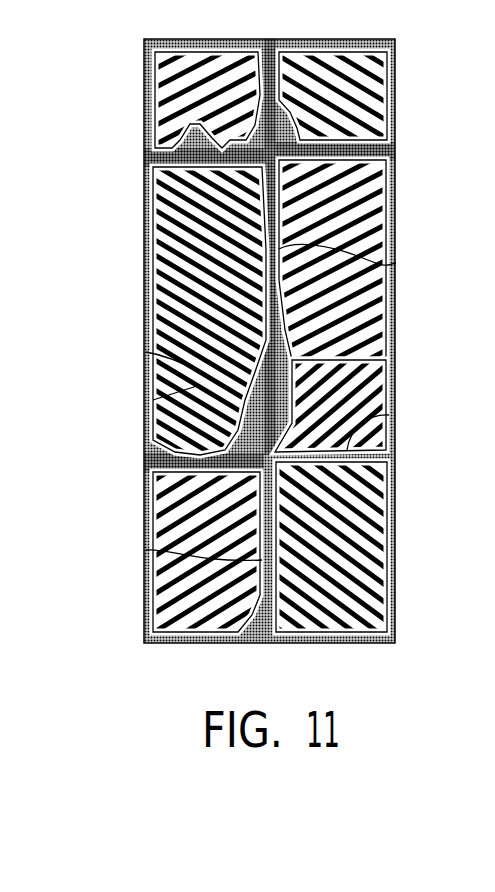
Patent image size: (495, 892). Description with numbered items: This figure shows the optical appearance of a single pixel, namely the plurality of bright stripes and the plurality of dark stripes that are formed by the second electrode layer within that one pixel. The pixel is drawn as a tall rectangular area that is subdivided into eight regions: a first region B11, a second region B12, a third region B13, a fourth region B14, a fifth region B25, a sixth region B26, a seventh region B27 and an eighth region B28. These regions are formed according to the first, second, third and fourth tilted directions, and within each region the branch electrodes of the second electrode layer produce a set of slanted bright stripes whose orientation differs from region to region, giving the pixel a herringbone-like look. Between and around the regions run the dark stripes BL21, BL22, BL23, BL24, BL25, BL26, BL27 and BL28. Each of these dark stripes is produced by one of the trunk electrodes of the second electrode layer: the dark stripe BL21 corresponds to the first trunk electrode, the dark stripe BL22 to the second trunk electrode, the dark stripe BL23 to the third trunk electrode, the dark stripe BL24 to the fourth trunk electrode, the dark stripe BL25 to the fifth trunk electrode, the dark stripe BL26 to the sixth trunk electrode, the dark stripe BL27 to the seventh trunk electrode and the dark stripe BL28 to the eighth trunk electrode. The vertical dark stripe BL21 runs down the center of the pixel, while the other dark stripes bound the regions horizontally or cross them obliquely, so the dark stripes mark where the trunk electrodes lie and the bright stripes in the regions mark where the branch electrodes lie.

The first region B11 is at (396, 77).
The second region B12 is at (146, 70).
The third region B13 is at (146, 236).
The fourth region B14 is at (396, 218).
The fifth region B25 is at (150, 401).
The sixth region B26 is at (396, 380).
The seventh region B27 is at (158, 533).
The eighth region B28 is at (366, 500).
The dark stripe BL21 is at (271, 40).
The dark stripe BL22 is at (396, 263).
The dark stripe BL23 is at (146, 150).
The dark stripe BL24 is at (396, 158).
The dark stripe BL25 is at (147, 353).
The dark stripe BL26 is at (147, 553).
The dark stripe BL27 is at (146, 456).
The dark stripe BL28 is at (362, 431).